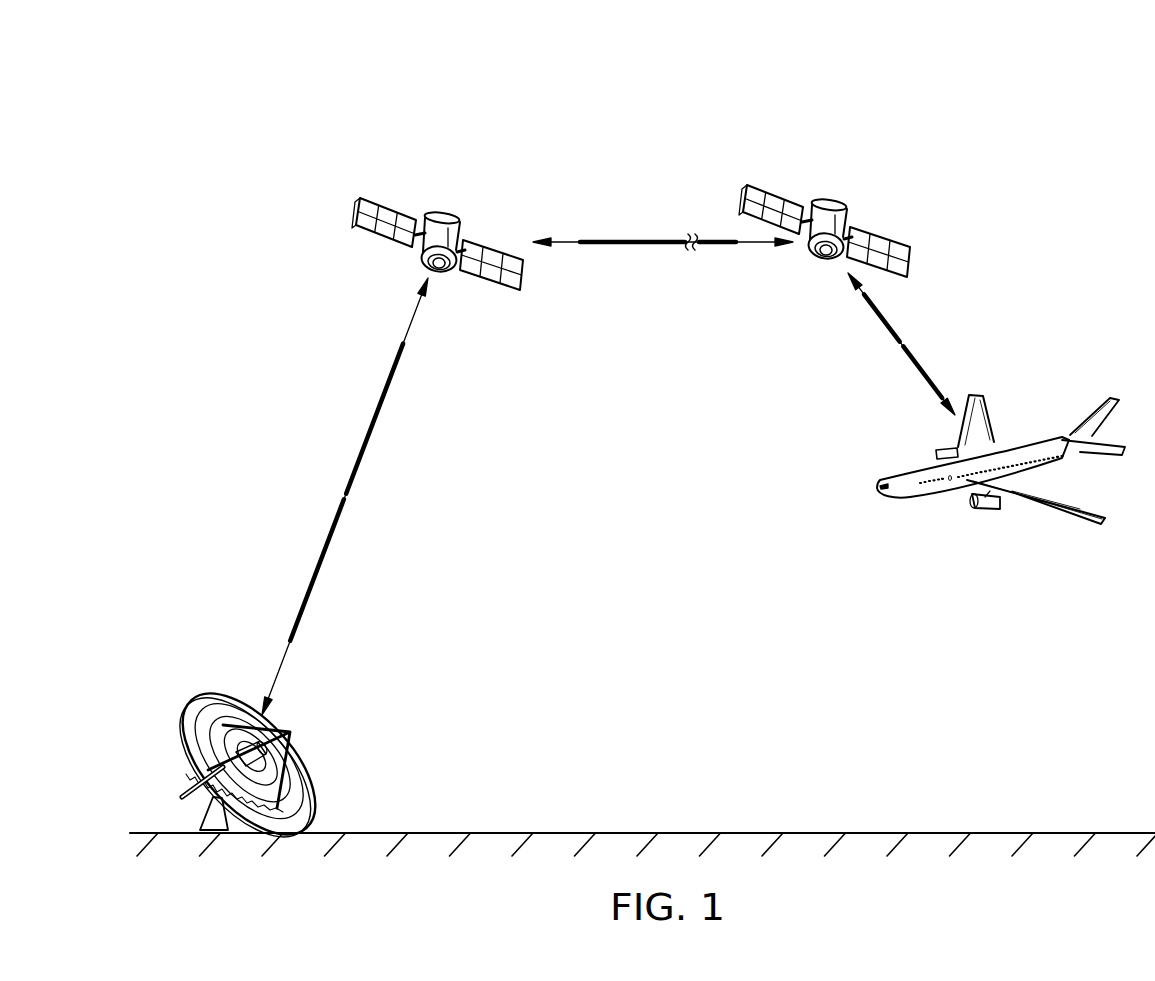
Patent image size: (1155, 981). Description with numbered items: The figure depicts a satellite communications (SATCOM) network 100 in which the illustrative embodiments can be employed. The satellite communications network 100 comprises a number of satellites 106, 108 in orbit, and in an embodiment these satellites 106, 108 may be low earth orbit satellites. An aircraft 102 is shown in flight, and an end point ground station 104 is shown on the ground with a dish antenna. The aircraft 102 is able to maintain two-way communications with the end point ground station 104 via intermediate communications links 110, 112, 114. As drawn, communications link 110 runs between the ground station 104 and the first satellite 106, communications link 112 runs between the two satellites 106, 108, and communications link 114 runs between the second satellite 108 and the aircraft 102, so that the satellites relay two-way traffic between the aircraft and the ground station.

The satellite communications network 100 is at (291, 83).
The aircraft 102 is at (1031, 507).
The end point ground station 104 is at (306, 784).
The satellite 106 is at (440, 215).
The satellite 108 is at (837, 203).
The communications link 110 is at (362, 437).
The communications link 112 is at (592, 241).
The communications link 114 is at (916, 357).